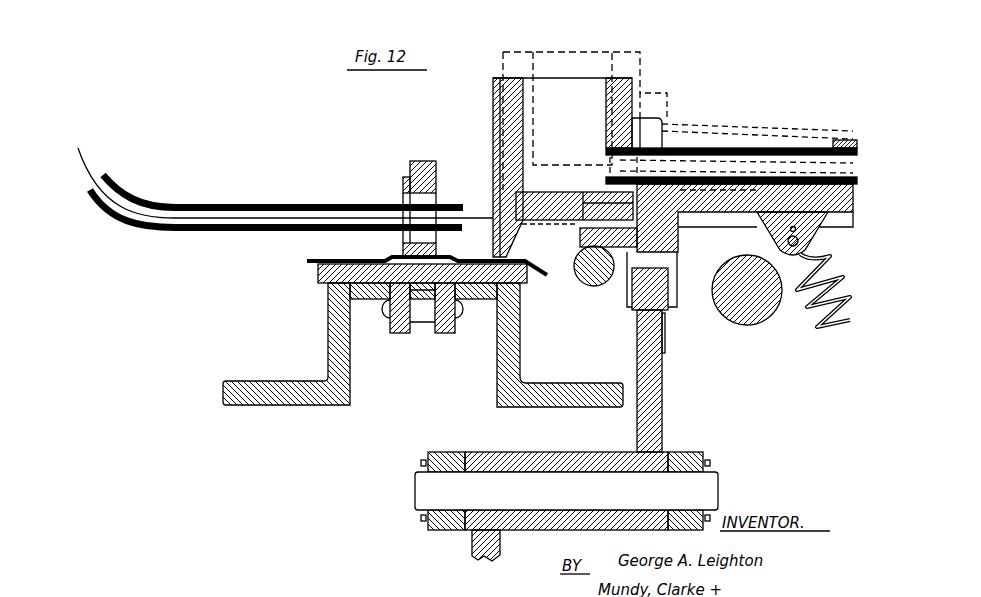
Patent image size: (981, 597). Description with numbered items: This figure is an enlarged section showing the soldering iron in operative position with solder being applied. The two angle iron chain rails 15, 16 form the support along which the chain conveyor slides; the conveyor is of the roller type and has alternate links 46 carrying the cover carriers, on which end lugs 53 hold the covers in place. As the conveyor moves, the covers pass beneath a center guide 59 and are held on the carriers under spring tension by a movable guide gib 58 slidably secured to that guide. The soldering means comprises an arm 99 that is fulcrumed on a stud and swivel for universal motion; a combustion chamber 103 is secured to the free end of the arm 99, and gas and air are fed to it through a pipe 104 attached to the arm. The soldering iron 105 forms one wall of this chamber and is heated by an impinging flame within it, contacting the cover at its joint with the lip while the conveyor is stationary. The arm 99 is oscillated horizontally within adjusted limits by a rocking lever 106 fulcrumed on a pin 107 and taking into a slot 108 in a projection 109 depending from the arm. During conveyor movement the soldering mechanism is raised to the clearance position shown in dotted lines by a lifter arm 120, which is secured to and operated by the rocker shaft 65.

The angle iron chain rail 15 is at (497, 383).
The angle iron chain rail 16 is at (350, 378).
The alternate link 46 is at (400, 333).
The end lug 53 is at (403, 238).
The movable guide gib 58 is at (405, 184).
The center guide 59 is at (430, 162).
The rocker shaft 65 is at (738, 320).
The arm 99 is at (655, 137).
The combustion chamber 103 is at (574, 83).
The pipe 104 is at (720, 150).
The soldering iron 105 is at (493, 126).
The rocking lever 106 is at (653, 395).
The pin 107 is at (708, 487).
The slot 108 is at (670, 293).
The projection 109 is at (672, 268).
The lifter arm 120 is at (589, 287).